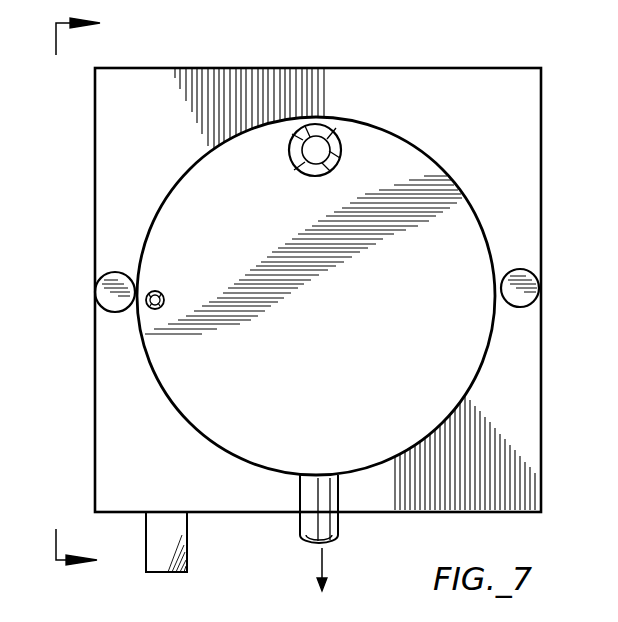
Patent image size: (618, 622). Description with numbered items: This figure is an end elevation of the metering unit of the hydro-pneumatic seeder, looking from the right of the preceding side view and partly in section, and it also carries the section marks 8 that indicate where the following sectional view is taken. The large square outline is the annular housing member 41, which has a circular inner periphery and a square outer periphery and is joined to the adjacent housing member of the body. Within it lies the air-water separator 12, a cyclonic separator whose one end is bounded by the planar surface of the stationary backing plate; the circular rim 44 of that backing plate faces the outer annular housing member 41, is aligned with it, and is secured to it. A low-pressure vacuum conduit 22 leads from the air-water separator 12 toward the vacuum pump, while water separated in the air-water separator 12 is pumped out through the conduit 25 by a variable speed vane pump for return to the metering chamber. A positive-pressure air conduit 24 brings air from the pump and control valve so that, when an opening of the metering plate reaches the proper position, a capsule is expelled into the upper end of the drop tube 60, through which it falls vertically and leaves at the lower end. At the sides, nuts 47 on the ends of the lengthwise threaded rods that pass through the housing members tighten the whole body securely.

The section line 8- 8 is at (83, 296).
The air-water separator 12 is at (437, 154).
The vacuum conduit 22 is at (340, 163).
The positive-pressure air conduit 24 is at (165, 298).
The conduit 25 is at (340, 518).
The annular housing member 41 is at (98, 124).
The circular rim 44 is at (480, 390).
The nuts 47 is at (100, 302).
The drop tube 60 is at (166, 574).